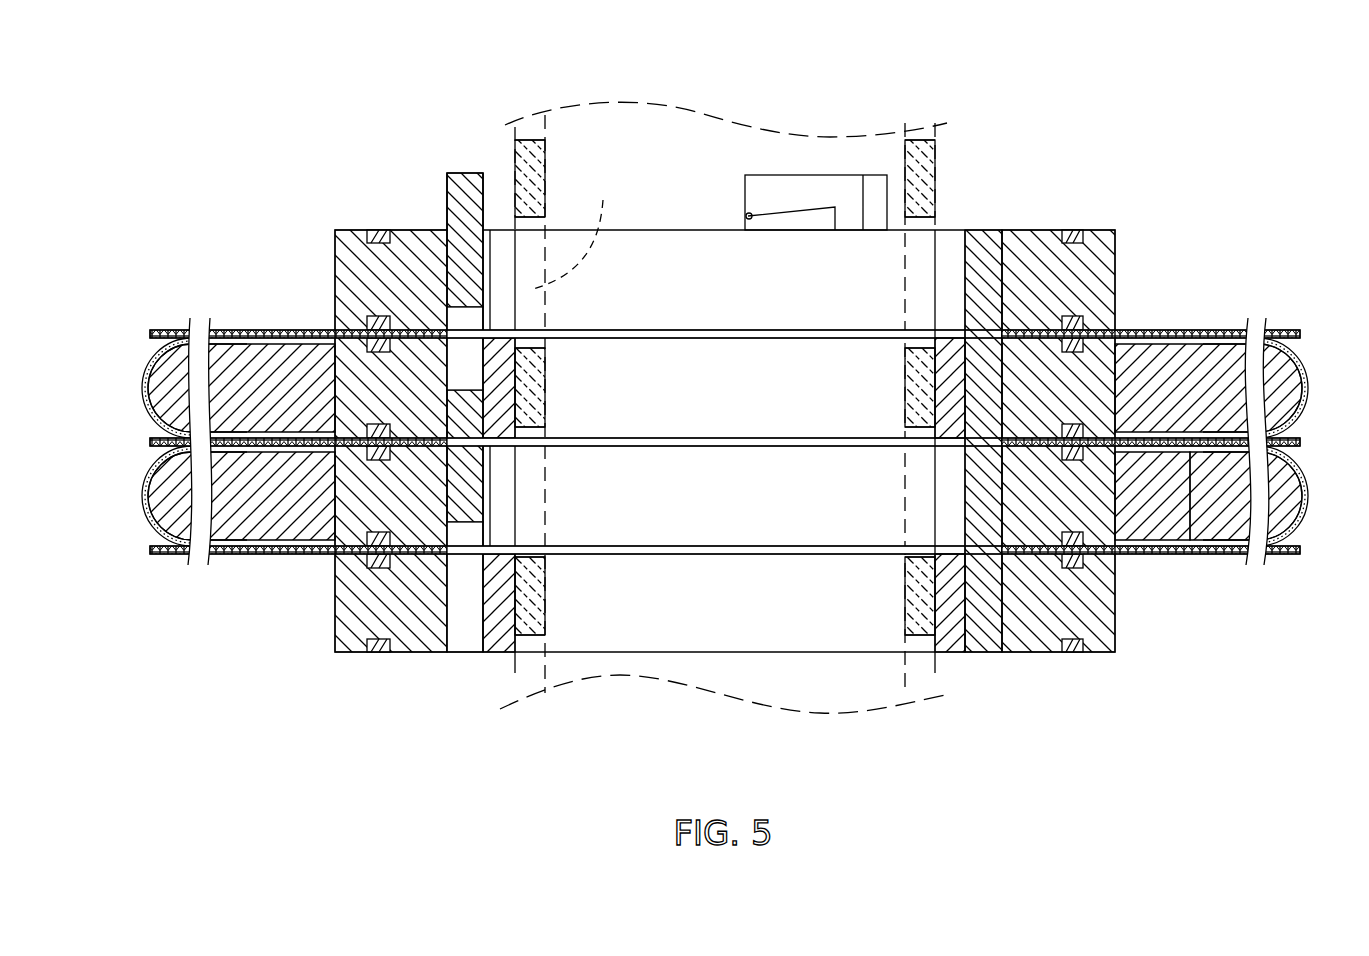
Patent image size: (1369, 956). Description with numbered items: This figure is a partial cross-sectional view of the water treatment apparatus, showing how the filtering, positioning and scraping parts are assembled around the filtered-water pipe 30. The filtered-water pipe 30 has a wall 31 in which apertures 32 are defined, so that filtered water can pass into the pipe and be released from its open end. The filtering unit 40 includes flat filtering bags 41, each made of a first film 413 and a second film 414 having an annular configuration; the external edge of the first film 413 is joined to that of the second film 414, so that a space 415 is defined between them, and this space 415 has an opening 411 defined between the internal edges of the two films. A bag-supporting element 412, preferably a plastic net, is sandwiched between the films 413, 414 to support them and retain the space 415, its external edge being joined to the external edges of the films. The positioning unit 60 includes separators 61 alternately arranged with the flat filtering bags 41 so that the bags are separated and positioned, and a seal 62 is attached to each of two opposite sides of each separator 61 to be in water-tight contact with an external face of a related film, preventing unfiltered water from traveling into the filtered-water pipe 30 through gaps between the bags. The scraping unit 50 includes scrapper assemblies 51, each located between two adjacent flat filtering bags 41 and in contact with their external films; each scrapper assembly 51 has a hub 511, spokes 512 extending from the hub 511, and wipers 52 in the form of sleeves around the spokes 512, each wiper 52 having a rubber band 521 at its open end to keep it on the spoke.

The filtered-water pipe 30 is at (723, 383).
The wall 31 is at (553, 120).
The apertures 32 is at (576, 228).
The filtering unit 40 is at (325, 436).
The flat filtering bags 41 is at (304, 314).
The opening 411 is at (660, 337).
The bag-supporting element 412 is at (175, 327).
The first film 413 is at (262, 327).
The second film 414 is at (195, 560).
The space 415 is at (278, 560).
The scraping unit 50 is at (1161, 478).
The scrapper assemblies 51 is at (1217, 585).
The hub 511 is at (1160, 527).
The spokes 512 is at (1228, 527).
The wipers 52 is at (1261, 545).
The rubber band 521 is at (1208, 345).
The positioning unit 60 is at (1025, 386).
The separators 61 is at (1040, 238).
The seal 62 is at (1075, 235).